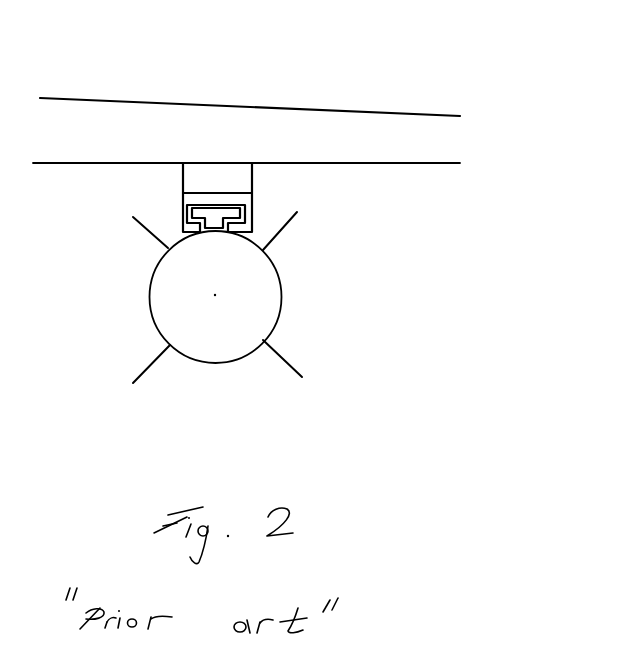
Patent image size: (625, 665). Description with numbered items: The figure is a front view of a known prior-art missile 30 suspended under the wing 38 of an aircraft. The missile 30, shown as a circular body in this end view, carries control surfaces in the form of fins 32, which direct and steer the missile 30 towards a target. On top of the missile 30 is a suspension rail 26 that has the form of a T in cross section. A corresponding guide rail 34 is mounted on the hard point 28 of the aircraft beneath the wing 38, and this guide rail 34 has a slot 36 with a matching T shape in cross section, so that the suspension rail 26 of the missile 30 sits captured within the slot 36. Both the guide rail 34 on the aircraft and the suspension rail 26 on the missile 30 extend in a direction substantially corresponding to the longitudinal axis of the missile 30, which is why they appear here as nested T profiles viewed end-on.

The suspension rail 26 is at (216, 211).
The hard point 28 is at (135, 195).
The missile 30 is at (283, 295).
The fins 32 is at (298, 367).
The guide rail 34 is at (190, 198).
The slot 36 is at (243, 210).
The wing 38 is at (365, 110).